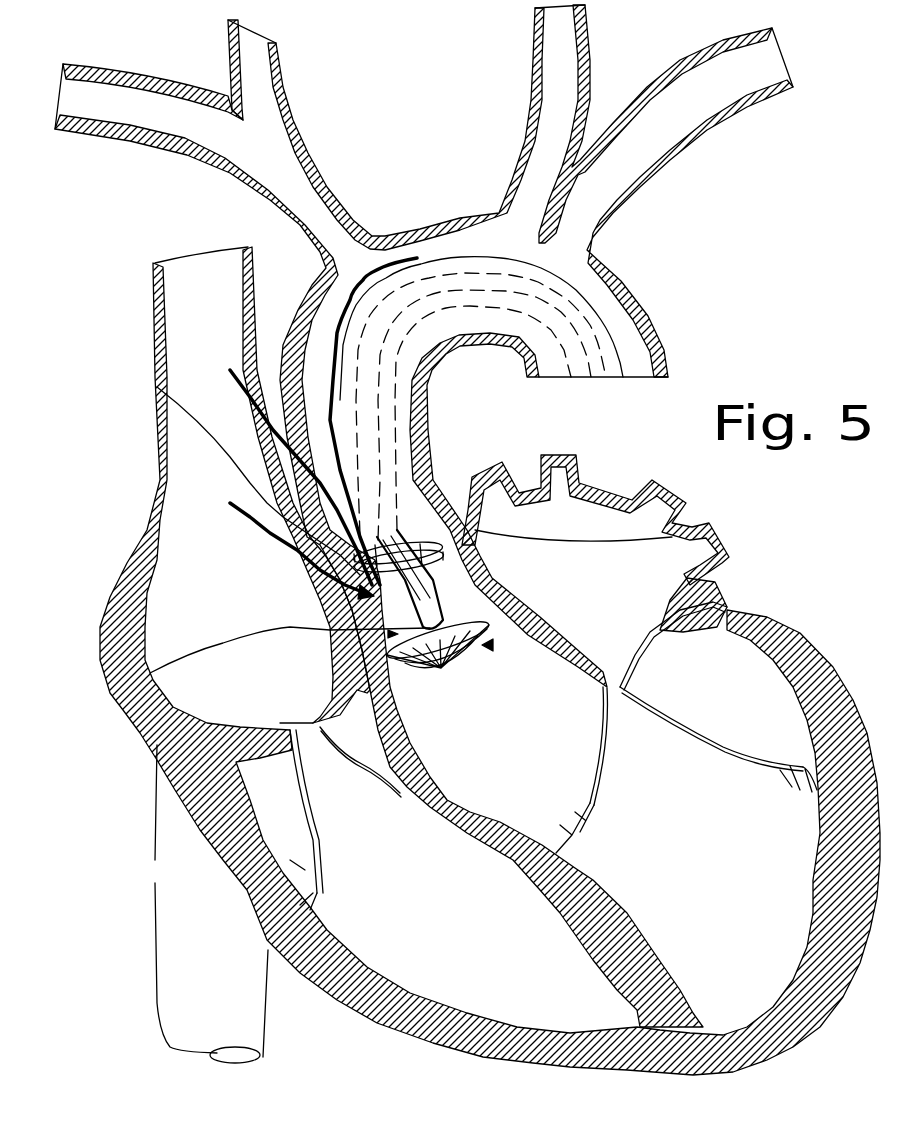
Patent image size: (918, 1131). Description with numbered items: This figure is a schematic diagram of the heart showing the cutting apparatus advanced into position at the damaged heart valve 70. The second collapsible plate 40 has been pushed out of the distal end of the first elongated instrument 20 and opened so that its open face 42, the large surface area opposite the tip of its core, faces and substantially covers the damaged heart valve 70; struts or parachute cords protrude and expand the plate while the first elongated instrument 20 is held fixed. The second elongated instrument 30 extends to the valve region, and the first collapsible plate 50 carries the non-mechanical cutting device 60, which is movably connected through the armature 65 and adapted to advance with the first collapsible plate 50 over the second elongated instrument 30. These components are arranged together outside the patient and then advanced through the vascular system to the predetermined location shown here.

The first elongated instrument 20 is at (333, 610).
The second elongated instrument 30 is at (405, 540).
The second collapsible plate 40 is at (490, 645).
The open face 42 is at (150, 673).
The first collapsible plate 50 is at (672, 537).
The non-mechanical cutting device 60 is at (230, 503).
The armature 65 is at (157, 387).
The damaged heart valve 70 is at (230, 370).